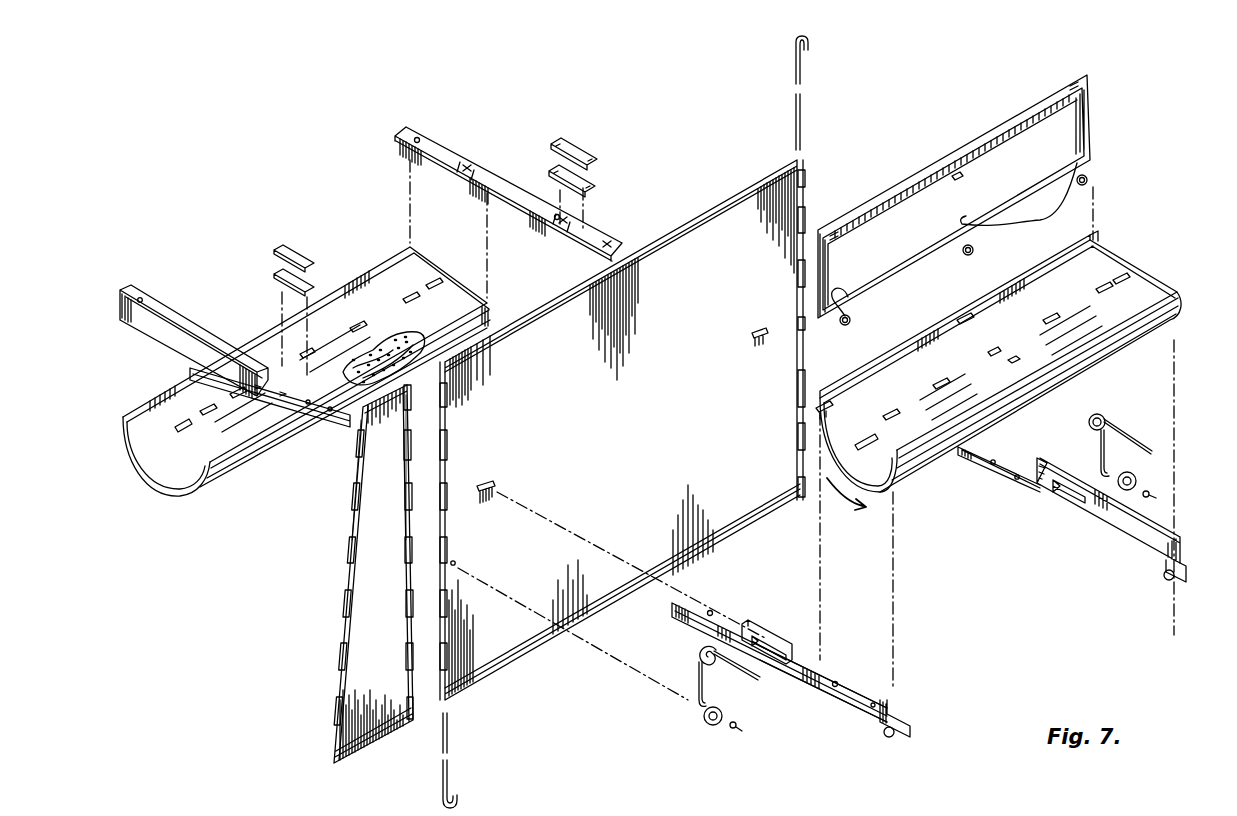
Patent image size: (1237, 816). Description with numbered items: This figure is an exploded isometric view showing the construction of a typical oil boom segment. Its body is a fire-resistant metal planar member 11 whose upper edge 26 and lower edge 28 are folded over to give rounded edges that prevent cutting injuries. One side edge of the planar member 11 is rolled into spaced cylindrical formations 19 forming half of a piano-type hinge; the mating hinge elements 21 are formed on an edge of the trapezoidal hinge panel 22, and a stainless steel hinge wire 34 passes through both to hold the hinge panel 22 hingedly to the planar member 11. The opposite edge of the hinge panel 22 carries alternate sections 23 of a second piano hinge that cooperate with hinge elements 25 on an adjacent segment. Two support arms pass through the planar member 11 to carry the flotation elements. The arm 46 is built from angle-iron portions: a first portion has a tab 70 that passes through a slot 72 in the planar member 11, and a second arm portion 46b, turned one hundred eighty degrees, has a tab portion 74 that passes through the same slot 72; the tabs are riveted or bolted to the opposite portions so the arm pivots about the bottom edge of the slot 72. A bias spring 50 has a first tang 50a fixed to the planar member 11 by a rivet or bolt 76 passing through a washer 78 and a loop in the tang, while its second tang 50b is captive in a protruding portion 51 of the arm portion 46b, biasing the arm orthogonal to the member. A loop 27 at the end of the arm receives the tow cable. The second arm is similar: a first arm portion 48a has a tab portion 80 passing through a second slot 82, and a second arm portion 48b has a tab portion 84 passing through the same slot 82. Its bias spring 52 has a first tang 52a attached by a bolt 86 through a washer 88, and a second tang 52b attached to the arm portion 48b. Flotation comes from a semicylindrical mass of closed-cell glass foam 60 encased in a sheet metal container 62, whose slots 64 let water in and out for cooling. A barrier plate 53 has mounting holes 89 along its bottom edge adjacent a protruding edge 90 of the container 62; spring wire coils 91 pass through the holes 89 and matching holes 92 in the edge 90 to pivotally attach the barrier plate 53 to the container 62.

The planar member 11 is at (706, 205).
The upper edge 26 is at (772, 178).
The lower edge 28 is at (543, 658).
The cylindrical formations 19 is at (490, 388).
The hinge wire 34 is at (803, 80).
The support arm 46 is at (440, 150).
The tab 70 is at (598, 236).
The semicylindrical container 62 is at (378, 270).
The protruding edge 90 is at (1068, 258).
The slots 64 is at (360, 327).
The closed-cell glass foam 60 is at (462, 312).
The first arm portion 48a is at (156, 302).
The tab portion 80 is at (323, 424).
The hinge panel 22 is at (382, 747).
The hinge elements 21 is at (406, 530).
The alternate sections 23 is at (352, 560).
The second slot 82 is at (490, 485).
The slot 72 is at (752, 336).
The tab portion 84 is at (716, 607).
The second arm portion 48b is at (850, 672).
The loop 27 is at (900, 736).
The protruding portion 51 is at (772, 635).
The bias spring 52 is at (696, 650).
The first tang 52a is at (692, 705).
The second tang 52b is at (752, 680).
The washer 88 is at (704, 727).
The bolt 86 is at (742, 731).
The barrier plate 53 is at (1088, 122).
The spring wire coils 91 is at (1088, 181).
The mounting holes 89 is at (1040, 221).
The matching holes 92 is at (963, 322).
The tab portion 74 is at (998, 465).
The second arm portion 46b is at (1110, 533).
The hinge elements 25 is at (1178, 572).
The bias spring 50 is at (1105, 421).
The second tang 50b is at (1152, 450).
The first tang 50a is at (1100, 455).
The washer 78 is at (1137, 478).
The rivet or bolt 76 is at (1158, 497).